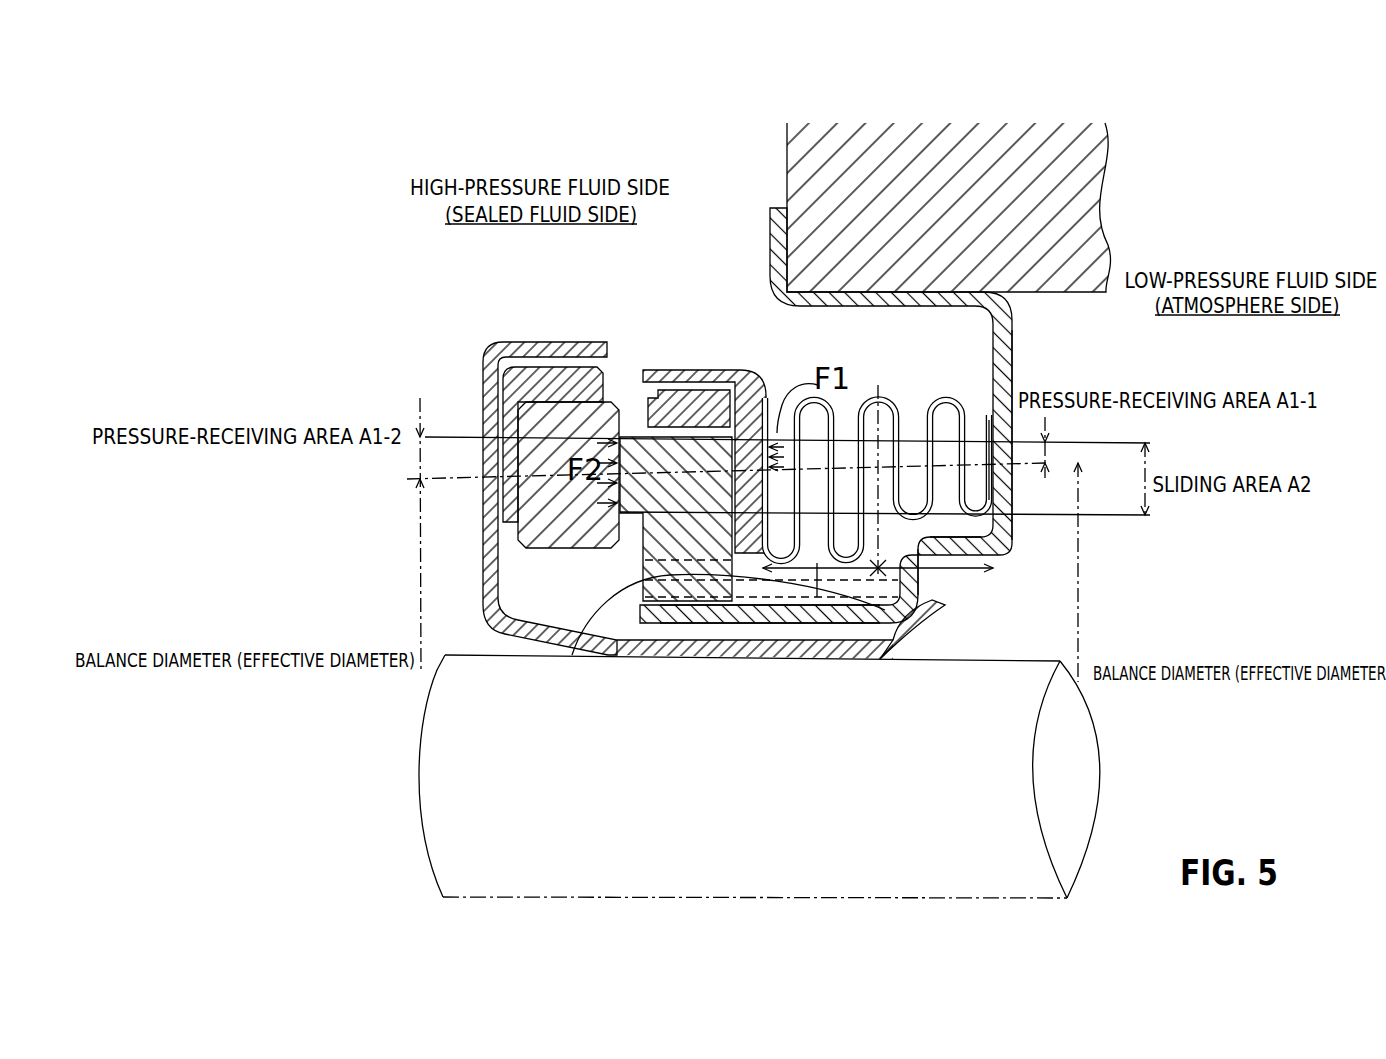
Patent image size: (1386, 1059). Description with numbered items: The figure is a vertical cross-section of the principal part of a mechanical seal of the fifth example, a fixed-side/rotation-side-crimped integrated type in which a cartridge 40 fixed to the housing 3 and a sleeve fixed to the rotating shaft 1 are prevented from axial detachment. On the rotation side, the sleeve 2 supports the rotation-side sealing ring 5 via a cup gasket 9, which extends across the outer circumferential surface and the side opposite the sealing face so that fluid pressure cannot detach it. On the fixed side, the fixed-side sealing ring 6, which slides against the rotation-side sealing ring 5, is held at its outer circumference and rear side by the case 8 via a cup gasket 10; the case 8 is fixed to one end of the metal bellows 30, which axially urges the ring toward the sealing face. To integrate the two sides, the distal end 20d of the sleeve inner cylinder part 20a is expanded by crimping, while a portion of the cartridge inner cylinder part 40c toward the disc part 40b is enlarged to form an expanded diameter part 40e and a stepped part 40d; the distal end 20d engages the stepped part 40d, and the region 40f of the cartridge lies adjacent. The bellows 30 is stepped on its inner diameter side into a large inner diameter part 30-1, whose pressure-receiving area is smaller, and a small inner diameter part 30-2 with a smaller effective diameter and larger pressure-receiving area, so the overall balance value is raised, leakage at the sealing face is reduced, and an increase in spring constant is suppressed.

The rotating shaft 1 is at (791, 858).
The sleeve 2 is at (483, 385).
The housing 3 is at (838, 191).
The rotation-side sealing ring 5 is at (603, 366).
The fixed-side sealing ring 6 is at (622, 442).
The case 8 is at (737, 382).
The cup gasket 9 is at (530, 366).
The cup gasket 10 is at (757, 375).
The inner cylinder part 20a is at (735, 650).
The distal end 20d is at (936, 640).
The metal bellows 30 is at (893, 404).
The large inner diameter part 30-1 is at (996, 572).
The small inner diameter part 30-2 is at (572, 655).
The cartridge 40 is at (1000, 295).
The disc part 40b is at (1013, 341).
The inner cylinder part 40c is at (708, 625).
The stepped part 40d is at (916, 591).
The expanded diameter part 40e is at (1000, 556).
The case end portion 40f is at (827, 626).